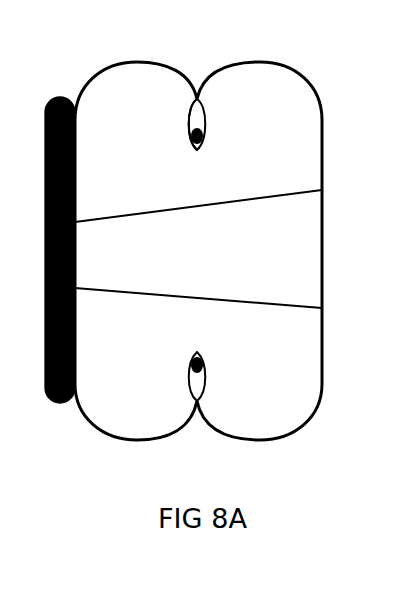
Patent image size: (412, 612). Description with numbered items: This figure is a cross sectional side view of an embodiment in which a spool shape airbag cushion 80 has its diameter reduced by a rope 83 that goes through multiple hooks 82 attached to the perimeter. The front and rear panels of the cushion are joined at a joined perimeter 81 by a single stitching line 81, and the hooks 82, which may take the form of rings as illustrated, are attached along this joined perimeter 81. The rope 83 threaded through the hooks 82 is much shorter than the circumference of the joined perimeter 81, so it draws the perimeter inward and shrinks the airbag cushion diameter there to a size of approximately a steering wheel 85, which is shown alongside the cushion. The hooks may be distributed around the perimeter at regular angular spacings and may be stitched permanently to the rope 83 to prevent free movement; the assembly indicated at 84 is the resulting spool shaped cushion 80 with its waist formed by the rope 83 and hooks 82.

The spool shape airbag cushion 80 is at (295, 68).
The joined perimeter 81 is at (190, 108).
The hooks 82 is at (207, 120).
The rope 83 is at (206, 135).
The junction region 84 is at (196, 428).
The steering wheel 85 is at (75, 333).